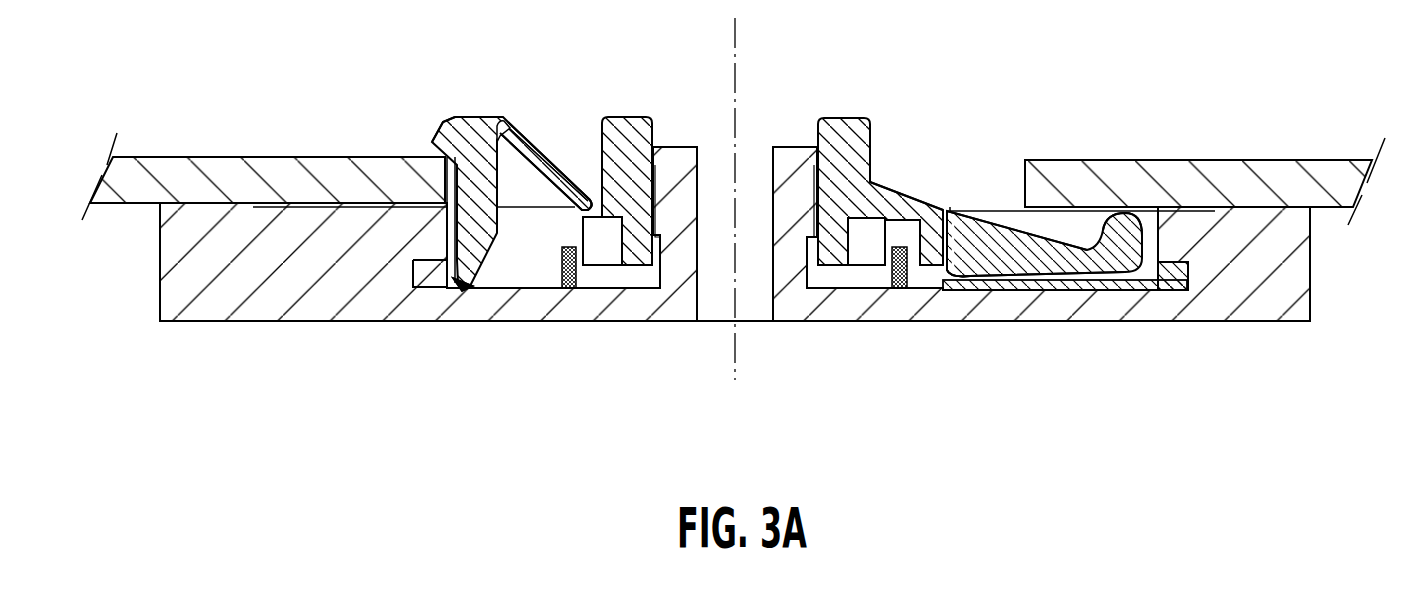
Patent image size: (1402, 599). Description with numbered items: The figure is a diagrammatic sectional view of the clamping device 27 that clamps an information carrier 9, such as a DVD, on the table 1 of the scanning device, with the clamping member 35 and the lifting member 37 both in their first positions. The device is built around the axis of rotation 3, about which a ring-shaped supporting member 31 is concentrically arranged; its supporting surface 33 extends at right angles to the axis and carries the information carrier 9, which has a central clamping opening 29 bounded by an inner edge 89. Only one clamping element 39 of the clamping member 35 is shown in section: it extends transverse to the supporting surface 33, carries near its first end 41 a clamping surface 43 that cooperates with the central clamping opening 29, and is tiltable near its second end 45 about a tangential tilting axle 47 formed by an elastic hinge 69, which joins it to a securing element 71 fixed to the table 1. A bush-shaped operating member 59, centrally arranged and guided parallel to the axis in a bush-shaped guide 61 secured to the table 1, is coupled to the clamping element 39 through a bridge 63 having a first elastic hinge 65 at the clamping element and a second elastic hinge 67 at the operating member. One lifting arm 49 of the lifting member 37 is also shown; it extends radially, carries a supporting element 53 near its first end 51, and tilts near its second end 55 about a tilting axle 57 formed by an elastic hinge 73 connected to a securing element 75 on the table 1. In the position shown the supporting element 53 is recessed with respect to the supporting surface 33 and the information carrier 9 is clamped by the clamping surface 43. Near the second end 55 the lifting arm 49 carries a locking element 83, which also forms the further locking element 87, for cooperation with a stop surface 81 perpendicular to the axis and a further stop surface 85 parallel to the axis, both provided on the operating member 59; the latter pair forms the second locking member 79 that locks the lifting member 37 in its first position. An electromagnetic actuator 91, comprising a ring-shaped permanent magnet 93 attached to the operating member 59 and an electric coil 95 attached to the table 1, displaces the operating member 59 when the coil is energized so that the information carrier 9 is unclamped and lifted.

The table 1 is at (497, 313).
The axis of rotation 3 is at (735, 45).
The information carrier 9 is at (1225, 160).
The clamping device 27 is at (924, 126).
The central clamping opening 29 is at (1022, 160).
The ring-shaped supporting member 31 is at (197, 308).
The supporting surface 33 is at (190, 208).
The clamping member 35 is at (560, 130).
The lifting member 37 is at (1063, 230).
The clamping element 39 is at (480, 127).
The first end 41 is at (458, 117).
The clamping surface 43 is at (433, 147).
The second end 45 is at (467, 290).
The tilting axle 47 is at (462, 288).
The lifting arm 49 is at (972, 210).
The first end 51 is at (1103, 268).
The supporting element 53 is at (1138, 210).
The second end 55 is at (998, 290).
The tilting axle 57 is at (950, 240).
The bush-shaped operating member 59 is at (837, 123).
The bush-shaped guide 61 is at (670, 153).
The bridge 63 is at (533, 142).
The first elastic hinge 65 is at (509, 120).
The second elastic hinge 67 is at (597, 198).
The elastic hinge 69 is at (462, 288).
The securing element 71 is at (418, 287).
The elastic hinge 73 is at (950, 240).
The securing element 75 is at (1052, 290).
The second locking member 79 is at (928, 155).
The stop surface 81 is at (915, 198).
The locking element 83 is at (942, 205).
The further stop surface 85 is at (910, 288).
The further locking element 87 is at (942, 205).
The inner edge 89 is at (1025, 208).
The electromagnetic actuator 91 is at (608, 296).
The ring-shaped permanent magnet 93 is at (592, 266).
The electric coil 95 is at (568, 288).